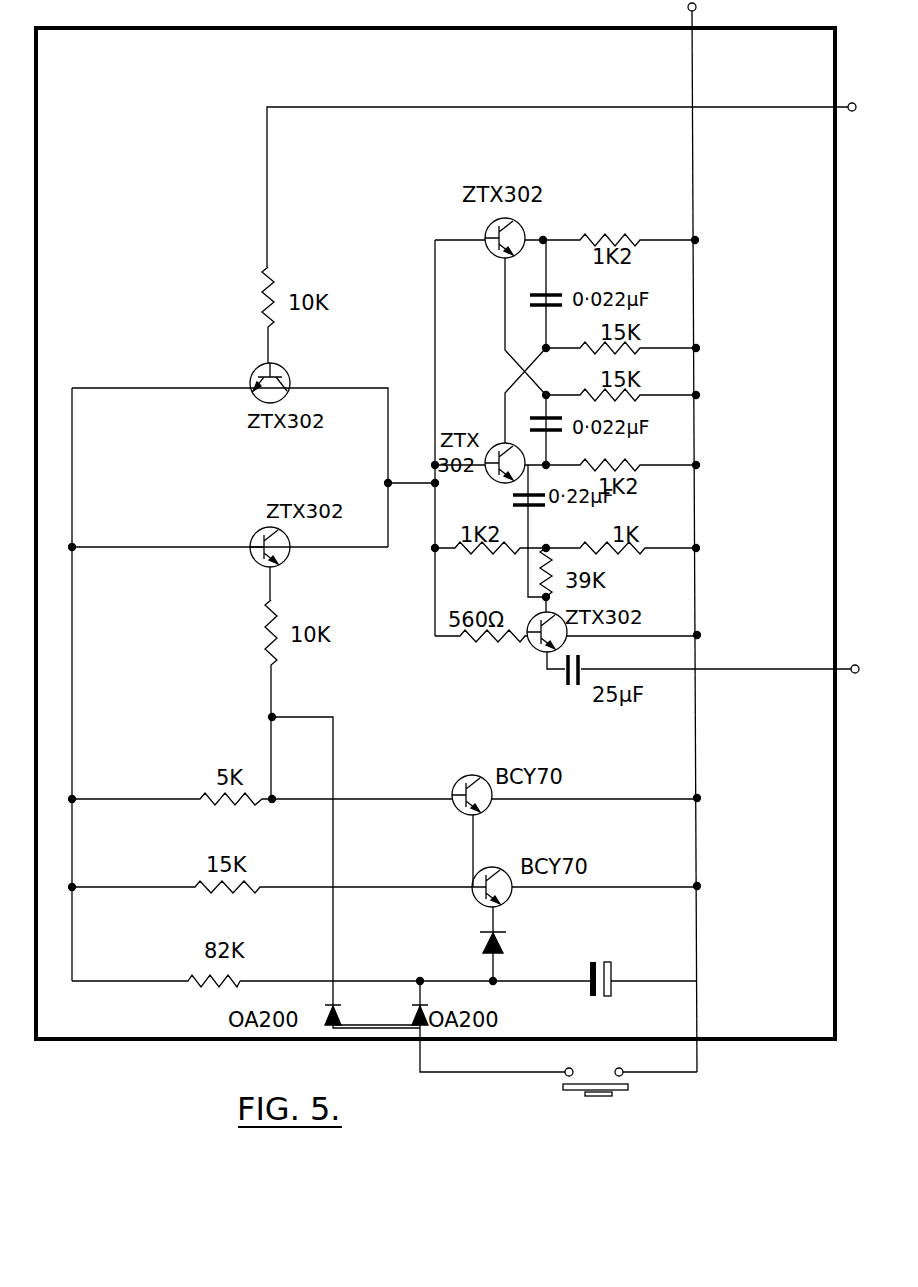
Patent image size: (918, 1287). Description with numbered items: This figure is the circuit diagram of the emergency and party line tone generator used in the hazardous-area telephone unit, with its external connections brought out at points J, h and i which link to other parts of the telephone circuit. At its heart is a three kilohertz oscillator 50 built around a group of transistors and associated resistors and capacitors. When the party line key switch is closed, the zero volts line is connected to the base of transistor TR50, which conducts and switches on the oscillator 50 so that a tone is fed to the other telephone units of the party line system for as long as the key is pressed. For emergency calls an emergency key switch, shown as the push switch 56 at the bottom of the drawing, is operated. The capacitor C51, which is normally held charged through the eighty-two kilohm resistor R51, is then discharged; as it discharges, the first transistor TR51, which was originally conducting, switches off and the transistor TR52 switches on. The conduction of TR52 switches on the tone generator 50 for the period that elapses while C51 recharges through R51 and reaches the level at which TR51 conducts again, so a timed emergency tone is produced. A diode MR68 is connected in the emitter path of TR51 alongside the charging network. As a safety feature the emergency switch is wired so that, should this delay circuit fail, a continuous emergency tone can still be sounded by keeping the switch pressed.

The 3 KHz oscillator 50 is at (624, 230).
The transistor TR50 is at (288, 367).
The first transistor TR51 is at (500, 866).
The transistor TR52 is at (478, 775).
The resistor R51 is at (211, 988).
The capacitor C51 is at (590, 997).
The diode MR68 is at (526, 944).
The switch 56 is at (612, 1093).
The terminal J is at (697, 536).
The terminal h is at (561, 174).
The terminal i is at (720, 655).